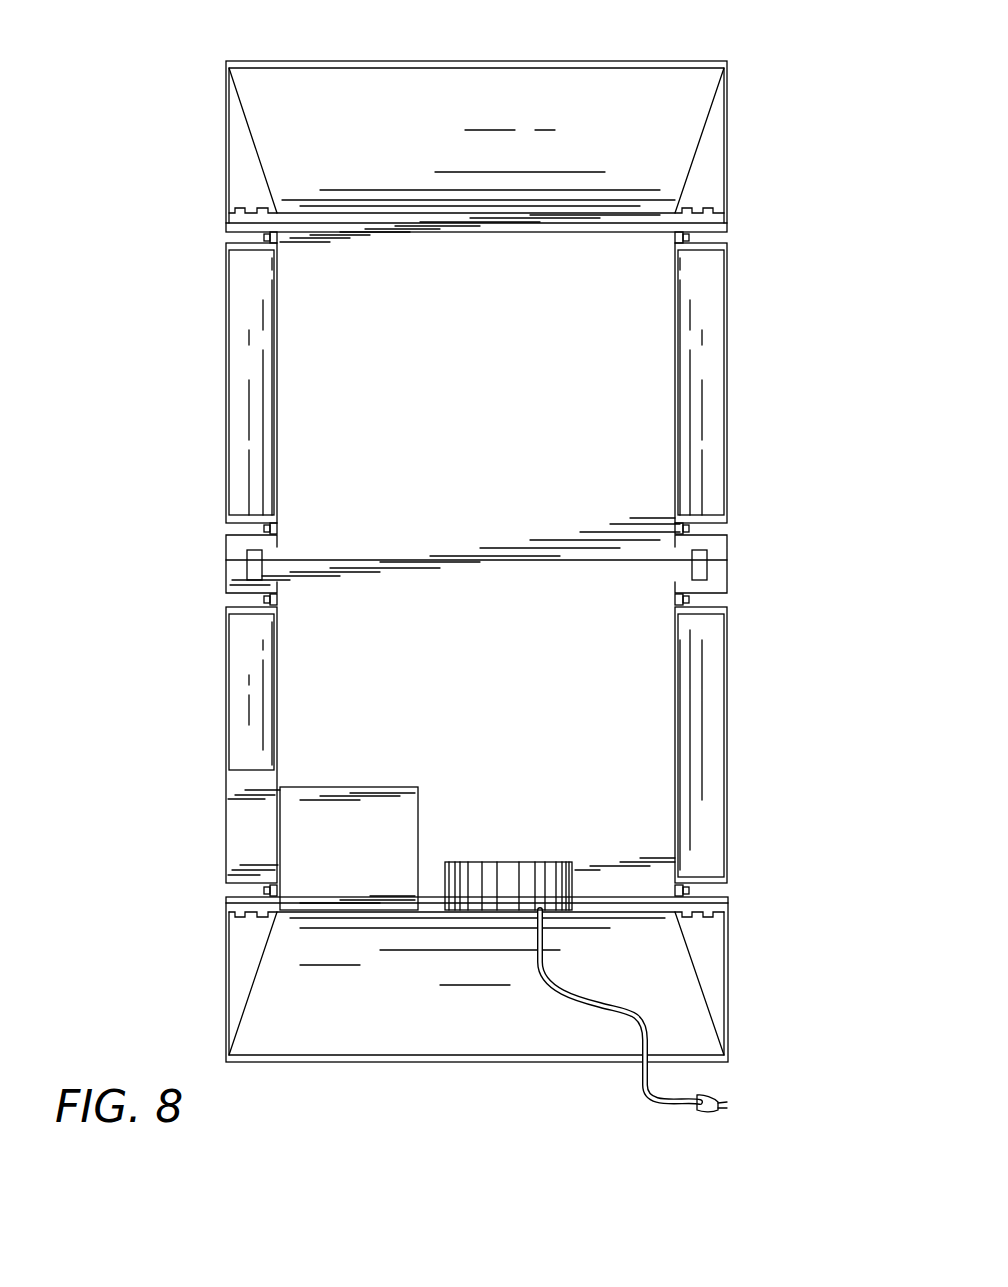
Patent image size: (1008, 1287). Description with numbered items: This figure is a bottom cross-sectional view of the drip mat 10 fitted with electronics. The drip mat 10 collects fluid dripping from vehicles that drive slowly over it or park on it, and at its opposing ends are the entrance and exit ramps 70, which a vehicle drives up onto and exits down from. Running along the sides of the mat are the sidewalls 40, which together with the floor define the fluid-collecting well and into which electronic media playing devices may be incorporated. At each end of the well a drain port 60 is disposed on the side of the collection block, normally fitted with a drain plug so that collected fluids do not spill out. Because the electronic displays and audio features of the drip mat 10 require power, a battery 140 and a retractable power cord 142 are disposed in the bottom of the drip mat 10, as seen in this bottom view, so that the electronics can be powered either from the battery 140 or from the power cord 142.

The drip mat 10 is at (116, 96).
The sidewall 40 is at (727, 440).
The drain port 60 is at (263, 527).
The entrance and exit ramps 70 is at (598, 61).
The battery 140 is at (360, 869).
The retractable power cord 142 is at (500, 862).